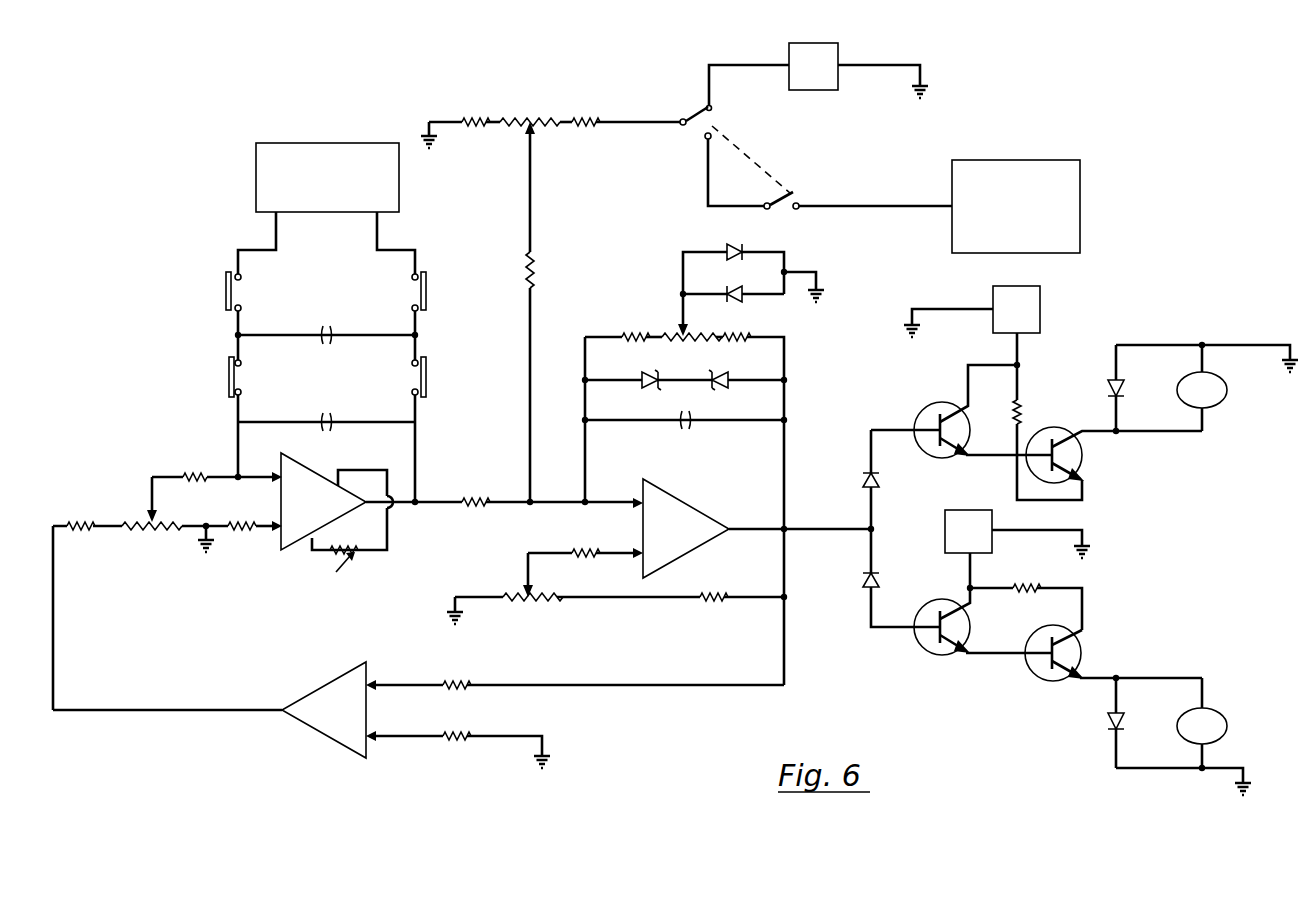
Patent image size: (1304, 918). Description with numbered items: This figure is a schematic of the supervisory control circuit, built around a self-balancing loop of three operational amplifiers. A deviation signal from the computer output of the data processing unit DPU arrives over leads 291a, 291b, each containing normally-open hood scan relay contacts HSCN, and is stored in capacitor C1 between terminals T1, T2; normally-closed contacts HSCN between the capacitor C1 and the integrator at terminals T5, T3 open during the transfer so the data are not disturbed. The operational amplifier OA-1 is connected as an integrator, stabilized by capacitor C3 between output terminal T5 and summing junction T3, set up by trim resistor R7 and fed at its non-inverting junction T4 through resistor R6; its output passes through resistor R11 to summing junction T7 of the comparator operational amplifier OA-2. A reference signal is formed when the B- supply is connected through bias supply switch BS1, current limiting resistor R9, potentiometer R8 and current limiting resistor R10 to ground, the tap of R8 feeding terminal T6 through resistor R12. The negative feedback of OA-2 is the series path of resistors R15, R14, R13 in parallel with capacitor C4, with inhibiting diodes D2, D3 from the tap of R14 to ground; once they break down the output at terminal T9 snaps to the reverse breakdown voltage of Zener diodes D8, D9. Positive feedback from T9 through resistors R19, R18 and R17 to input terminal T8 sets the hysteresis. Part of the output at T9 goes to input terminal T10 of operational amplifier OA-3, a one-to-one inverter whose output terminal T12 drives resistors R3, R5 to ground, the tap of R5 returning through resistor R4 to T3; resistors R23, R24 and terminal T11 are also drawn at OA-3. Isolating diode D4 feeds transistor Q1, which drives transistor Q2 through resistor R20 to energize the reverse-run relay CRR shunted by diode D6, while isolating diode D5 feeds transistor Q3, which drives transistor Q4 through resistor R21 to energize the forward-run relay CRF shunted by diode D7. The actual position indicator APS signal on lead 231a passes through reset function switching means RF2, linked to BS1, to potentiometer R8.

The data processing unit DPU is at (350, 143).
The lead 291a is at (276, 232).
The lead 291b is at (386, 232).
The hood scan relay contacts HSCN is at (324, 347).
The capacitor C1 is at (328, 325).
The capacitor C3 is at (338, 414).
The capacitor C4 is at (690, 420).
The terminal T1 is at (233, 334).
The terminal T2 is at (418, 334).
The input terminal T3 is at (276, 472).
The non-inverting junction T4 is at (276, 520).
The output terminal T5 is at (412, 506).
The terminal T6 is at (528, 498).
The input terminal T7 is at (642, 500).
The input terminal T8 is at (642, 550).
The output terminal T9 is at (782, 528).
The input terminal T10 is at (374, 680).
The terminal T11 is at (374, 730).
The output terminal T12 is at (278, 706).
The resistor R3 is at (76, 531).
The resistor R4 is at (200, 472).
The resistor R5 is at (130, 531).
The resistor R6 is at (234, 531).
The trim resistor R7 is at (362, 568).
The potentiometer R8 is at (542, 114).
The current limiting resistor R9 is at (602, 114).
The current limiting resistor R10 is at (476, 114).
The resistor R11 is at (480, 495).
The resistor R12 is at (536, 258).
The resistor R13 is at (630, 336).
The resistor R14 is at (676, 324).
The resistor R15 is at (754, 334).
The resistor R17 is at (594, 546).
The resistor R18 is at (526, 603).
The resistor R19 is at (708, 603).
The resistor R20 is at (1020, 414).
The resistor R21 is at (1038, 584).
The resistor R23 is at (464, 736).
The resistor R24 is at (464, 684).
The diode D2 is at (730, 248).
The diode D3 is at (730, 290).
The isolating diode D4 is at (864, 482).
The isolating diode D5 is at (864, 580).
The diode D6 is at (1108, 392).
The diode D7 is at (1108, 722).
The Zener type diode D8 is at (642, 378).
The Zener type diode D9 is at (728, 378).
The transistor Q1 is at (924, 412).
The transistor Q2 is at (1082, 454).
The transistor Q3 is at (932, 650).
The transistor Q4 is at (1042, 676).
The operational amplifier OA-1 is at (371, 501).
The operational amplifier OA-2 is at (752, 528).
The operational amplifier OA-3 is at (209, 710).
The bias supply switch BS1 is at (706, 108).
The reset function switching means RF2 is at (792, 190).
The lead 231a is at (850, 206).
The actual position indicator APS is at (1042, 160).
The B- voltage supply B- is at (939, 315).
The reverse-run relay CRR is at (1207, 386).
The forward-run relay CRF is at (1183, 736).